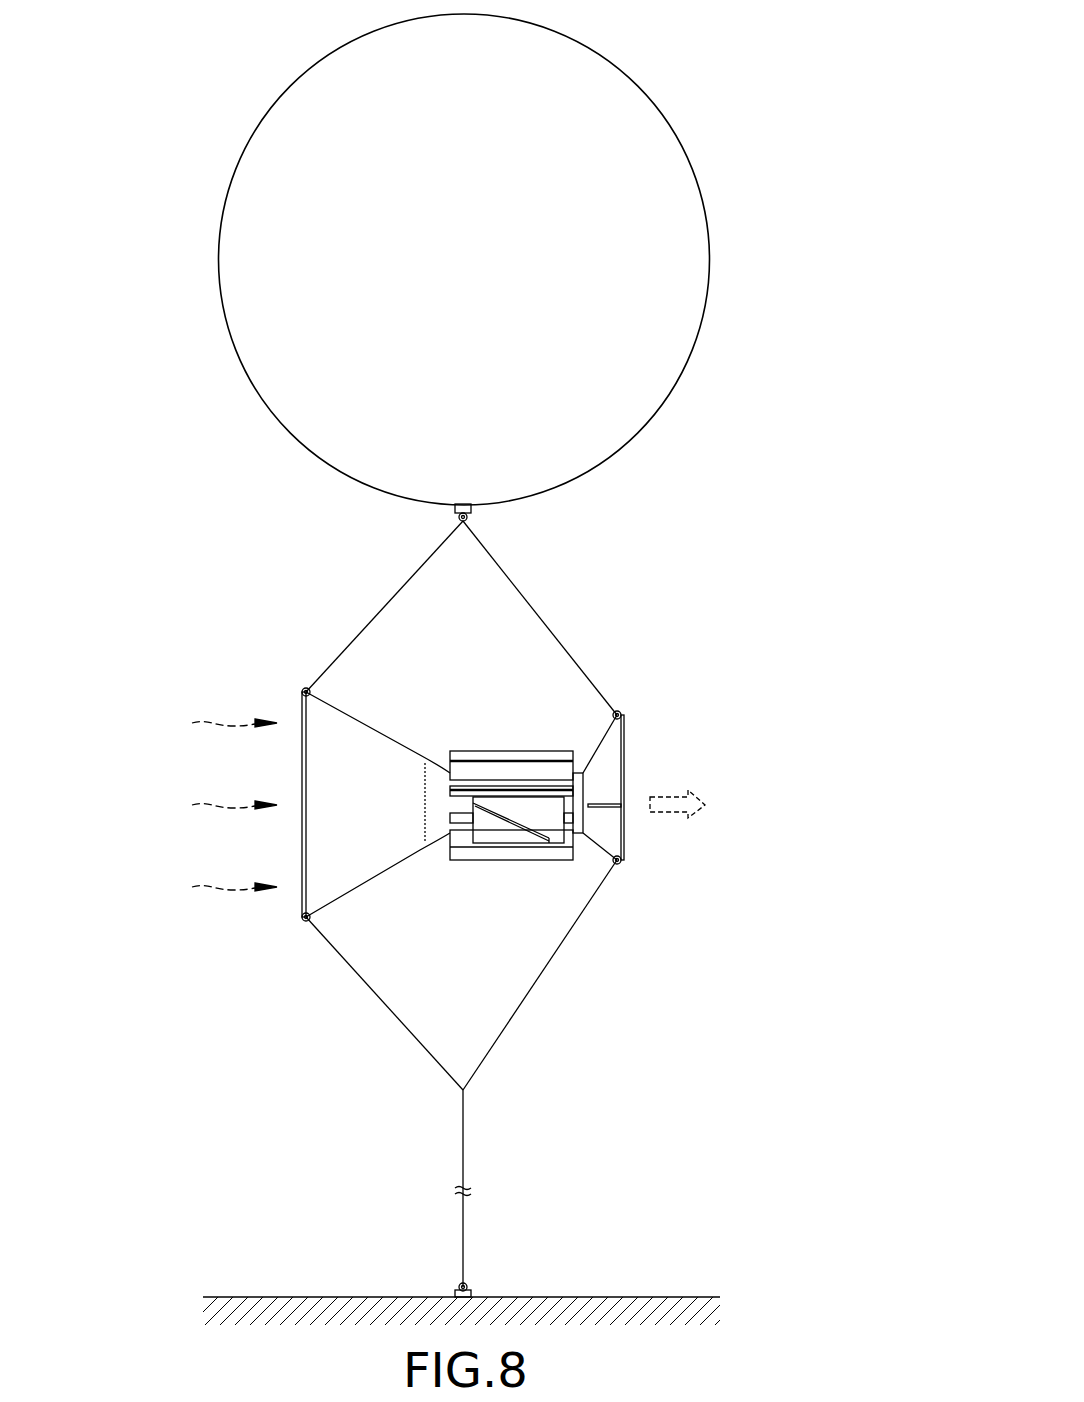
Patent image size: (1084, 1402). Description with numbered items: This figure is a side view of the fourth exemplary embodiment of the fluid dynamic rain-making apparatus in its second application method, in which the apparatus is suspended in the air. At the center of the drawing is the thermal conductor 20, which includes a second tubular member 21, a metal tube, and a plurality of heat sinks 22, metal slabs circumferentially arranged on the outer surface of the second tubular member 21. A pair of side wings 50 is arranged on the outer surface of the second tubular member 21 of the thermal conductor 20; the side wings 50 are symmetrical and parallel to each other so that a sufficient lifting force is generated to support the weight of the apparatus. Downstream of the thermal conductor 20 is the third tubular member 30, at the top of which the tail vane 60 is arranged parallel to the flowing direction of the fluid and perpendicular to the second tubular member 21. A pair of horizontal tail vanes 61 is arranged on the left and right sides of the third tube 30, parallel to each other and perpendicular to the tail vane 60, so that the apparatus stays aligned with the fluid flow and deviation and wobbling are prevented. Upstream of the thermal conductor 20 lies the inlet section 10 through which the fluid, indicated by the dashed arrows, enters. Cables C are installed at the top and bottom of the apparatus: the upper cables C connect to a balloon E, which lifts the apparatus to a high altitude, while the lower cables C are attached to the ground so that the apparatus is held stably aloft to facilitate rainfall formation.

The balloon E is at (685, 179).
The inlet duct 10 is at (378, 753).
The thermal conductor 20 is at (501, 755).
The second tubular member 21 is at (505, 787).
The heat sinks 22 is at (543, 755).
The third tubular member 30 is at (612, 822).
The side wings 50 is at (542, 825).
The tail vane 60 is at (615, 737).
The horizontal tail vanes 61 is at (608, 801).
The cables C is at (463, 1141).